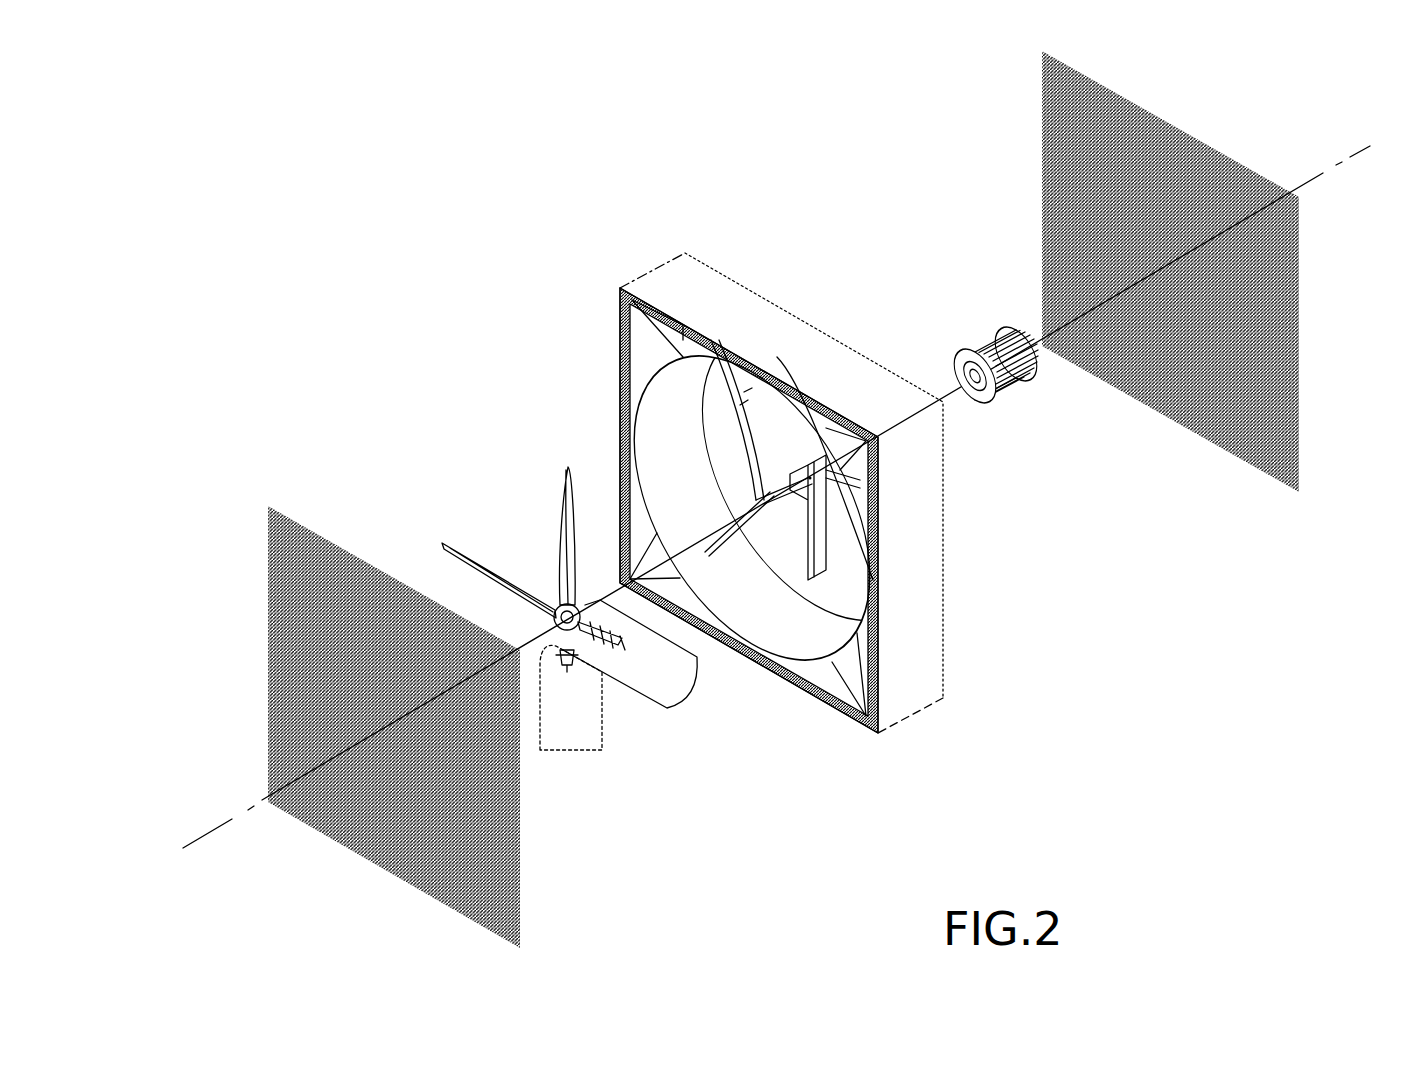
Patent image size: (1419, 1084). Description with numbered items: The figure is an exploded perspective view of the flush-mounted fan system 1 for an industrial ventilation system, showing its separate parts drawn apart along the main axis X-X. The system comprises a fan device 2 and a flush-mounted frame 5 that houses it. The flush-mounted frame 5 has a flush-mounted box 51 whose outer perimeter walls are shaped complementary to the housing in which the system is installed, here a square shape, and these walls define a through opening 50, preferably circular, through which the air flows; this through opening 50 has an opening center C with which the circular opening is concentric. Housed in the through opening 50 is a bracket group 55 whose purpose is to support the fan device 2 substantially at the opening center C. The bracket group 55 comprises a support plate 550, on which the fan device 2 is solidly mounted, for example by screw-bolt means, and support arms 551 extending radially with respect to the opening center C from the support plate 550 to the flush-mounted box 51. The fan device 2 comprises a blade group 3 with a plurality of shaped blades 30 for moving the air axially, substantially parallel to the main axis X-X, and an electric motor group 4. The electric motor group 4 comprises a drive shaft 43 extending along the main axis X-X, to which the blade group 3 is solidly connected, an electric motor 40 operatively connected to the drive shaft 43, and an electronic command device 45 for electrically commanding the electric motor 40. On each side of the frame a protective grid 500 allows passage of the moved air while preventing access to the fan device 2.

The flush-mounted fan system 1 is at (222, 252).
The fan device 2 is at (627, 770).
The blade group 3 is at (486, 467).
The shaped blades 30 is at (555, 482).
The electric motor group 4 is at (970, 363).
The electric motor 40 is at (975, 279).
The drive shaft 43 is at (952, 377).
The electronic command device 45 is at (1022, 315).
The flush-mounted frame 5 is at (840, 483).
The through opening 50 is at (793, 573).
The flush-mounted box 51 is at (660, 297).
The bracket group 55 is at (750, 383).
The support plate 550 is at (790, 490).
The support arms 551 is at (745, 402).
The protective grid 500 is at (268, 570).
The opening center C is at (810, 478).
The main axis X-X is at (195, 837).